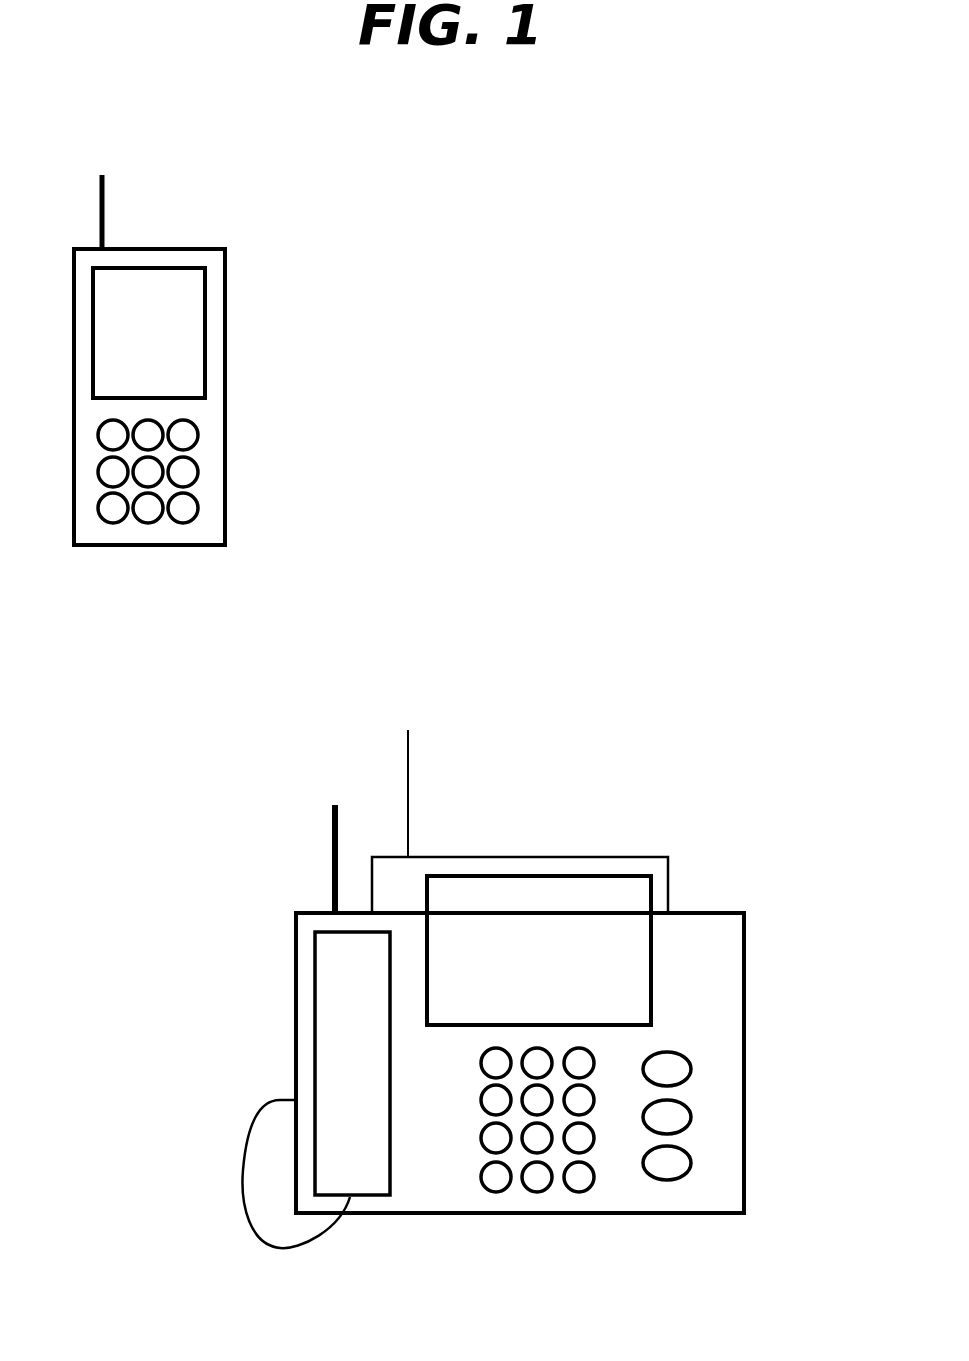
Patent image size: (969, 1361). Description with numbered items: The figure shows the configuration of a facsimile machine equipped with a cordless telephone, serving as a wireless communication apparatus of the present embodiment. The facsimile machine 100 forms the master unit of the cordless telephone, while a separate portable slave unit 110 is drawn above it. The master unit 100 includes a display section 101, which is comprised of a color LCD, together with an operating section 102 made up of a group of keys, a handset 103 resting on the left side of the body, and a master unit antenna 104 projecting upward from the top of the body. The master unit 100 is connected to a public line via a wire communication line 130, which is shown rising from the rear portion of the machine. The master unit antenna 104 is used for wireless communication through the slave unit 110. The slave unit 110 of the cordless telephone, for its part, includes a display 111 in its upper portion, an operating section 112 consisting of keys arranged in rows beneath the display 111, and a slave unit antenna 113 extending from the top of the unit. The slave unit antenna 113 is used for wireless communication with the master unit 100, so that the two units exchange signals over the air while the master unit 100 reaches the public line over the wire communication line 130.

The facsimile machine 100 is at (490, 1215).
The display section 101 is at (655, 888).
The operating section 102 is at (696, 1043).
The handset 103 is at (313, 985).
The master unit antenna 104 is at (332, 853).
The slave unit 110 is at (148, 535).
The display 111 is at (206, 328).
The operating section 112 is at (198, 465).
The slave unit antenna 113 is at (102, 203).
The wire communication line 130 is at (408, 786).